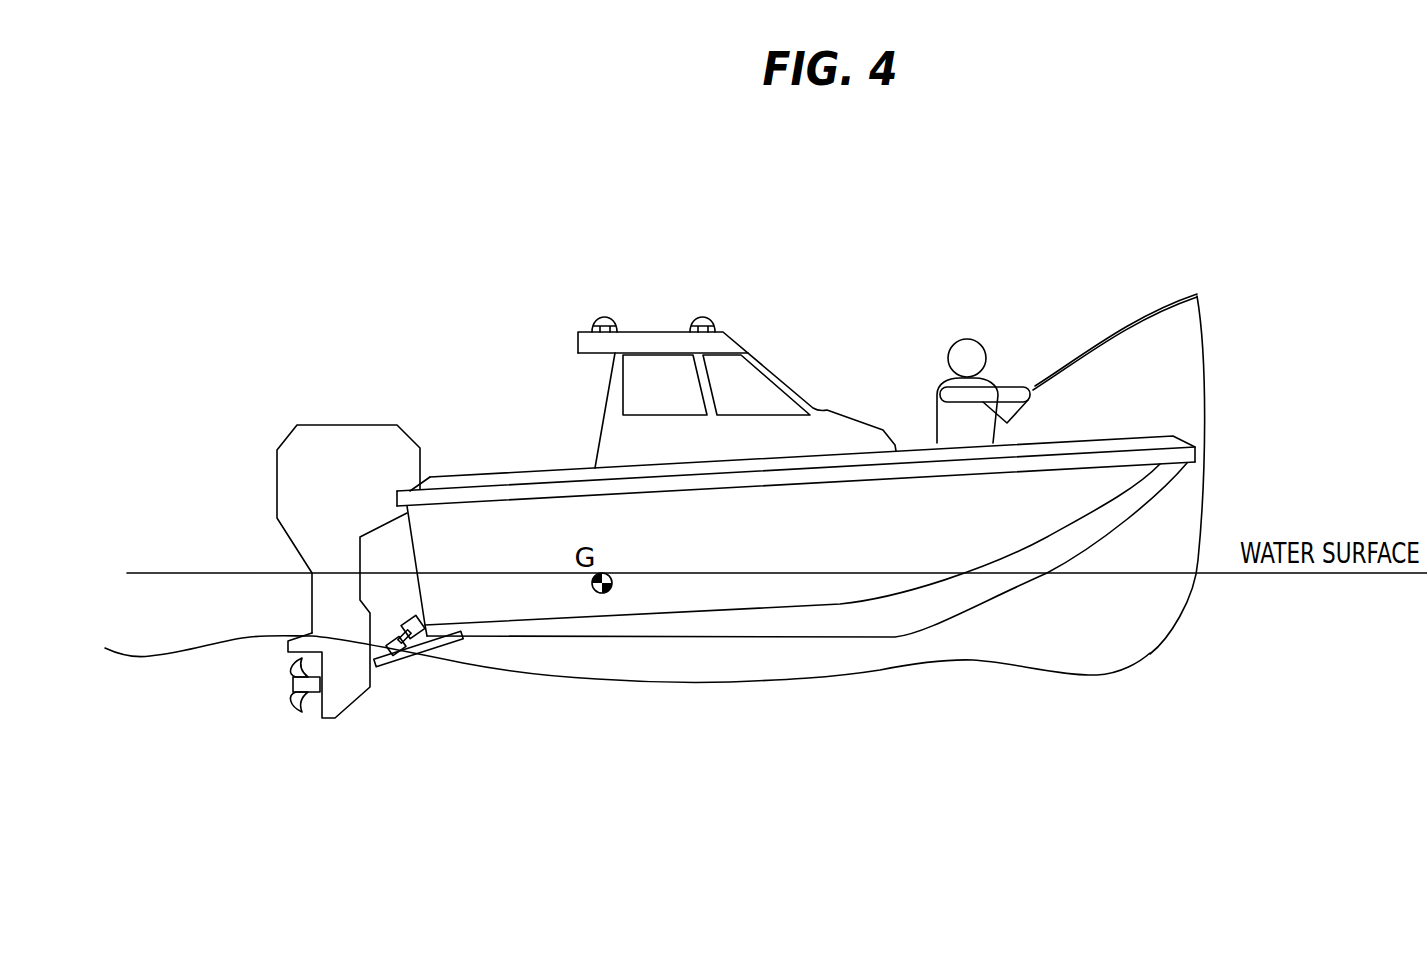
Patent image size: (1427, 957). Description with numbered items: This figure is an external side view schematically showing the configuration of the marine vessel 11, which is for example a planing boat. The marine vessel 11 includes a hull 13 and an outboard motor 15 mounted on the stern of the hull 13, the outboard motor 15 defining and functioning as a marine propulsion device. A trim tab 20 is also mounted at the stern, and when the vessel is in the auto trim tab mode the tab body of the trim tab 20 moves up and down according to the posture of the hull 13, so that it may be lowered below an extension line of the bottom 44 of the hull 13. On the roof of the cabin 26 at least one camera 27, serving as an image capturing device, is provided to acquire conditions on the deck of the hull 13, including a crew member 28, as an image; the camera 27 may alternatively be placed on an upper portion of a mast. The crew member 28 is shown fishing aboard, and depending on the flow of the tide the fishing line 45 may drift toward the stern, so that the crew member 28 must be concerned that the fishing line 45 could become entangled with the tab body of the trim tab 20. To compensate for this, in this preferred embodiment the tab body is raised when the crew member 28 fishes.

The marine vessel 11 is at (867, 227).
The hull 13 is at (518, 472).
The outboard motor 15 is at (296, 425).
The trim tab 20 is at (395, 687).
The cabin 26 is at (731, 338).
The camera 27 is at (607, 317).
The crew member 28 is at (937, 390).
The bottom 44 is at (640, 637).
The fishing line 45 is at (1152, 653).